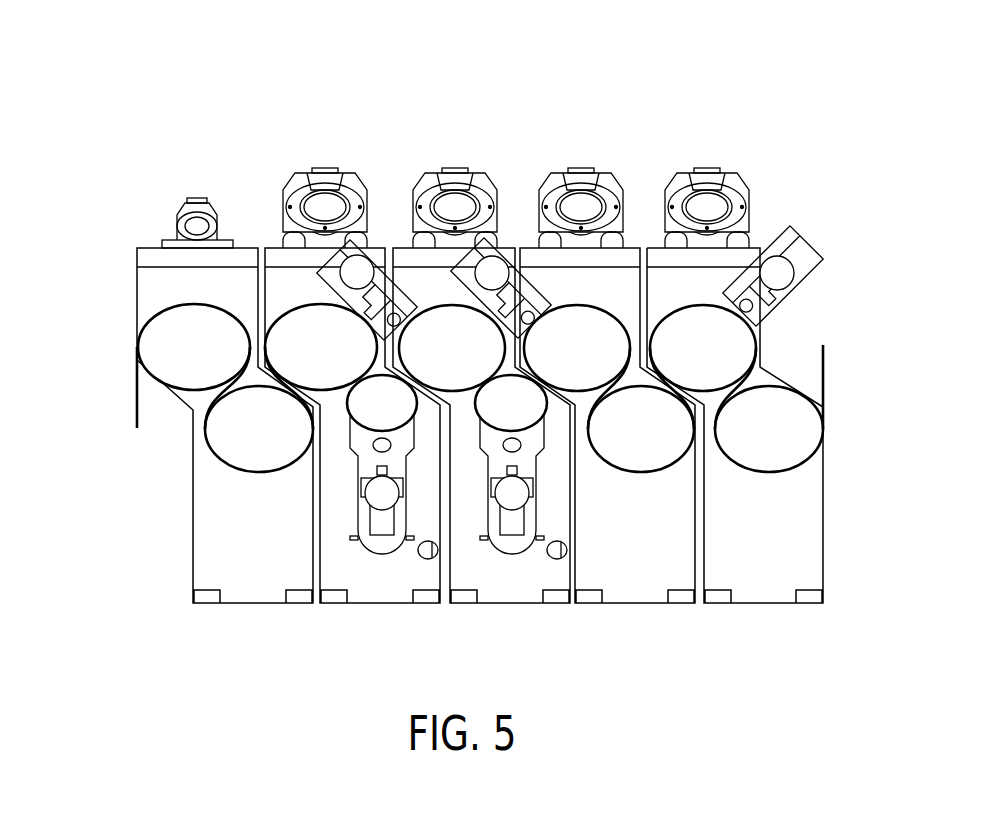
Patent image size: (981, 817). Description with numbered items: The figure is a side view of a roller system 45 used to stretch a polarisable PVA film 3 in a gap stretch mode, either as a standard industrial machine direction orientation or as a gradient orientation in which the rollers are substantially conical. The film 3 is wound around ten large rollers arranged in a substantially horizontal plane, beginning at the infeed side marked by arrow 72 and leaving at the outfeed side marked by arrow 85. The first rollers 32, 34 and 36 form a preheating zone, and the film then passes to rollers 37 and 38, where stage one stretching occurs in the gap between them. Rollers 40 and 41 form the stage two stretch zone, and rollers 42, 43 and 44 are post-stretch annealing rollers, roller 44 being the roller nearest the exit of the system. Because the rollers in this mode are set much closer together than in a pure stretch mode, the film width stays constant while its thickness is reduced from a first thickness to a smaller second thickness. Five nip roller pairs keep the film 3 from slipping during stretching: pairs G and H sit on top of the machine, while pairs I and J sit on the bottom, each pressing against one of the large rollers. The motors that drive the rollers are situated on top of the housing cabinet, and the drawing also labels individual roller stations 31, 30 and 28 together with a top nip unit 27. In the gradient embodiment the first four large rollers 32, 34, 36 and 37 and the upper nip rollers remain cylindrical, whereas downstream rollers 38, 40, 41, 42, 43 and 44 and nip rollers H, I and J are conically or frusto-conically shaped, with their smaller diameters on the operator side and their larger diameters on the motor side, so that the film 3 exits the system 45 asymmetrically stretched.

The roller system 45 is at (282, 117).
The first print unit 31 is at (163, 307).
The print unit 30 is at (435, 307).
The print unit 28 is at (600, 307).
The inking unit 27 is at (803, 240).
The PVA film 3 is at (137, 401).
The web infeed direction 72 is at (35, 445).
The web outfeed direction 85 is at (915, 448).
The large roller 44 is at (194, 347).
The large roller 42 is at (321, 347).
The large roller 40 is at (452, 348).
The large roller 37 is at (577, 348).
The large roller 34 is at (703, 348).
The large roller 43 is at (259, 429).
The large roller 41 is at (382, 403).
The large roller 38 is at (511, 403).
The large roller 36 is at (641, 429).
The large roller 32 is at (769, 429).
The nip roller H is at (367, 290).
The nip roller G is at (501, 288).
The nip roller J is at (382, 475).
The nip roller I is at (512, 475).